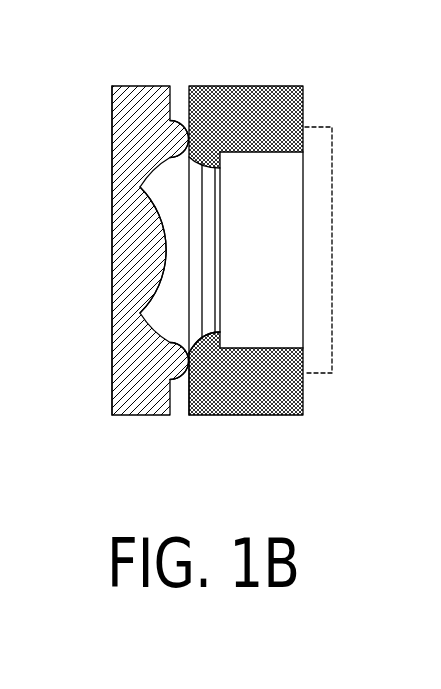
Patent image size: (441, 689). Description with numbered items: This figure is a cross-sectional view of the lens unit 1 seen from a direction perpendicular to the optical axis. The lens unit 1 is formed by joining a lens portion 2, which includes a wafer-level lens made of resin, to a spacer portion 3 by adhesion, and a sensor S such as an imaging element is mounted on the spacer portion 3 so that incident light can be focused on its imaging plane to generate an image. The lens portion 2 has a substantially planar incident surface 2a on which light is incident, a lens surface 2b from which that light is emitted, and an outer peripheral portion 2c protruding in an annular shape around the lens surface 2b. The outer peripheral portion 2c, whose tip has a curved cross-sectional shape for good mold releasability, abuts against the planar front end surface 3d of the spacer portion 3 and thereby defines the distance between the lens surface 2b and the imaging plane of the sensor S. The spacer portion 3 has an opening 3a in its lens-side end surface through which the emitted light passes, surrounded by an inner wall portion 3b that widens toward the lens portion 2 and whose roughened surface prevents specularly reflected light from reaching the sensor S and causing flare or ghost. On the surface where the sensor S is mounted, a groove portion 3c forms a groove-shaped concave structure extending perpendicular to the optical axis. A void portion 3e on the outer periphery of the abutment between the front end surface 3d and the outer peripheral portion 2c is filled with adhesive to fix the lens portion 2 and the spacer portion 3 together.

The lens unit 1 is at (328, 69).
The lens portion 2 is at (143, 86).
The incident surface 2a is at (112, 244).
The lens surface 2b is at (166, 243).
The outer peripheral portion 2c is at (184, 127).
The spacer portion 3 is at (248, 86).
The opening 3a is at (190, 288).
The inner wall portion 3b is at (220, 195).
The groove portion 3c is at (250, 348).
The front end surface 3d is at (197, 398).
The void portion 3e is at (180, 403).
The sensor S is at (340, 152).